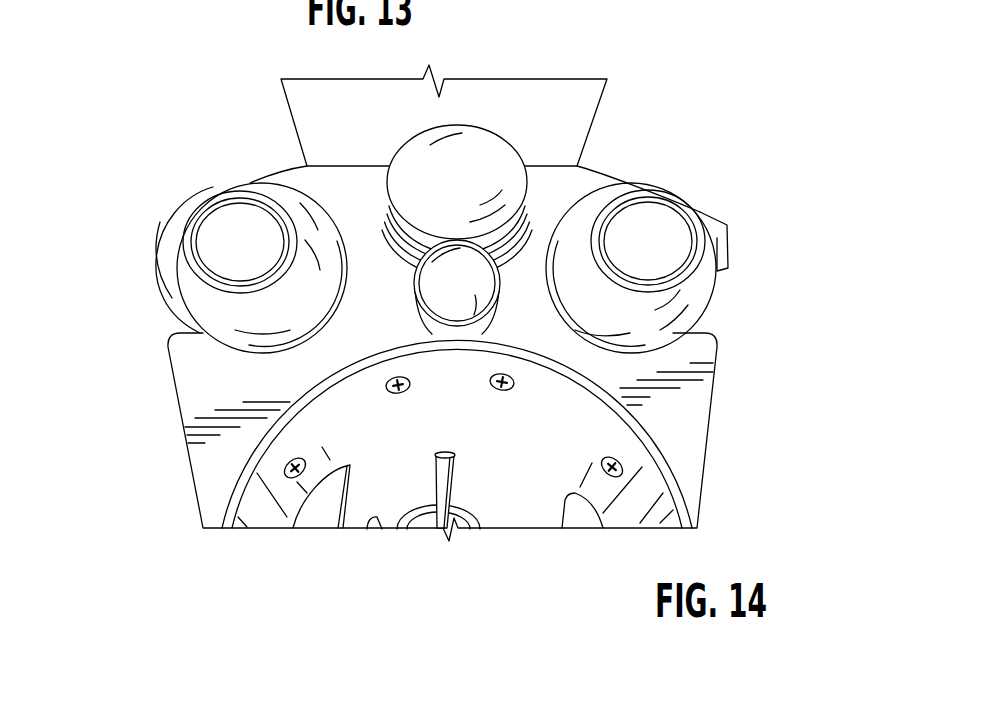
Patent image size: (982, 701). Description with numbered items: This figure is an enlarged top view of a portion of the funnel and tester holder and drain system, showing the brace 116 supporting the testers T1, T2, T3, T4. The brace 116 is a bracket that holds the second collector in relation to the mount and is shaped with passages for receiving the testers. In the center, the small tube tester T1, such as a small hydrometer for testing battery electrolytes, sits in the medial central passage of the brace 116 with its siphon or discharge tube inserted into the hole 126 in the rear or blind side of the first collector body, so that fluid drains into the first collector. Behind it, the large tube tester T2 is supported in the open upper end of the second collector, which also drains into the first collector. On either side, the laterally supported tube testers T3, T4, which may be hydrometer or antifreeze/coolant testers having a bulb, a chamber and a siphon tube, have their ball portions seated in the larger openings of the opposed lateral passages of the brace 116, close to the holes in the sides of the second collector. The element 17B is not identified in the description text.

The small tube tester T1 is at (473, 278).
The large tube tester T2 is at (458, 138).
The laterally supported tube tester T3 is at (707, 252).
The laterally supported tube tester T4 is at (177, 262).
The hood 17B is at (167, 307).
The brace 116 is at (678, 418).
The hole 126 is at (433, 456).